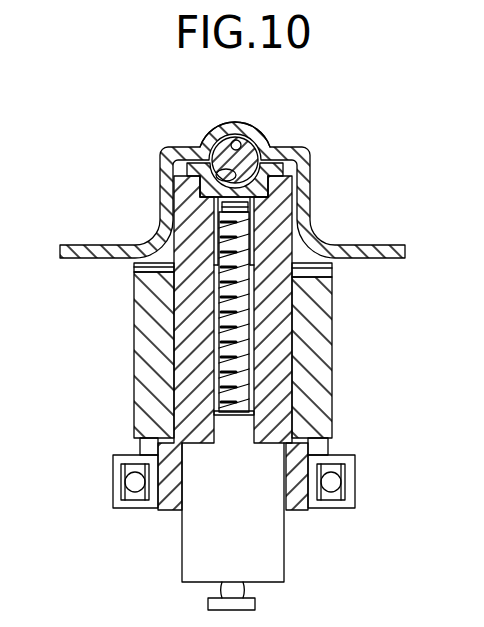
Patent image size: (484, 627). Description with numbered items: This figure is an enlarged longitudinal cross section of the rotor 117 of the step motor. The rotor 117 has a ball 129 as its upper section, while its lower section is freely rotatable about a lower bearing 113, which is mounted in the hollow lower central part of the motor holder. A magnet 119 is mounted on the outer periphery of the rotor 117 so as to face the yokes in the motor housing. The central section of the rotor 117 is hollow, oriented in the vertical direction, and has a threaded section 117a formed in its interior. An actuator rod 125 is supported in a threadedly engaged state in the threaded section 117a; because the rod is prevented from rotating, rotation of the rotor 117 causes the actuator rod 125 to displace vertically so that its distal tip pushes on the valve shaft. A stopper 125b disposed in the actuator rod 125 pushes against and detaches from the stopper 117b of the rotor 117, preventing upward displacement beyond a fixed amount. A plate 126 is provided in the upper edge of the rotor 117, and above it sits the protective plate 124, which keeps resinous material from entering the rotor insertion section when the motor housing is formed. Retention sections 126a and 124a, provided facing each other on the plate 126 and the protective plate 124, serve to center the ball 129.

The protective plate 124 is at (308, 157).
The retention section 124a is at (237, 141).
The ball 129 is at (250, 153).
The plate 126 is at (263, 187).
The retention section 126a is at (202, 191).
The rotor 117 is at (280, 301).
The threaded section 117a is at (258, 360).
The stopper 117b is at (258, 445).
The actuator rod 125 is at (238, 352).
The stopper 125b is at (210, 443).
The magnet 119 is at (147, 365).
The bearing 113 is at (328, 508).